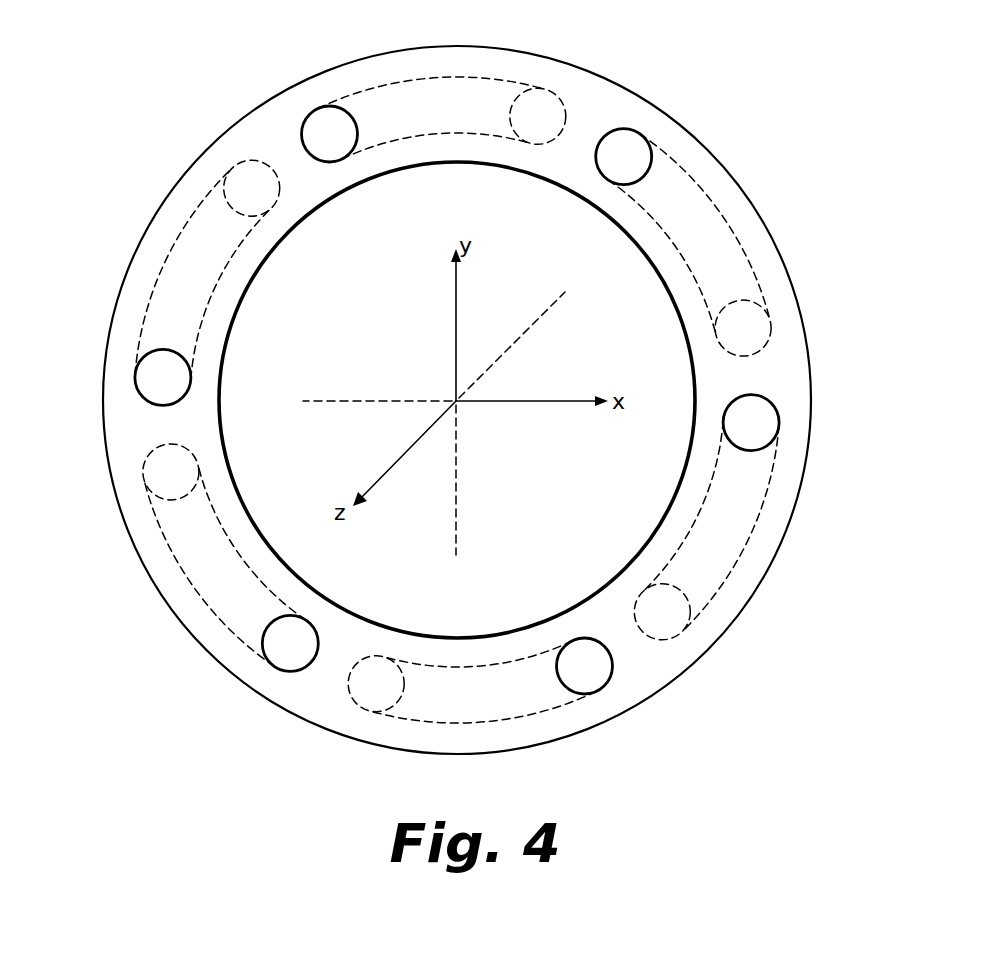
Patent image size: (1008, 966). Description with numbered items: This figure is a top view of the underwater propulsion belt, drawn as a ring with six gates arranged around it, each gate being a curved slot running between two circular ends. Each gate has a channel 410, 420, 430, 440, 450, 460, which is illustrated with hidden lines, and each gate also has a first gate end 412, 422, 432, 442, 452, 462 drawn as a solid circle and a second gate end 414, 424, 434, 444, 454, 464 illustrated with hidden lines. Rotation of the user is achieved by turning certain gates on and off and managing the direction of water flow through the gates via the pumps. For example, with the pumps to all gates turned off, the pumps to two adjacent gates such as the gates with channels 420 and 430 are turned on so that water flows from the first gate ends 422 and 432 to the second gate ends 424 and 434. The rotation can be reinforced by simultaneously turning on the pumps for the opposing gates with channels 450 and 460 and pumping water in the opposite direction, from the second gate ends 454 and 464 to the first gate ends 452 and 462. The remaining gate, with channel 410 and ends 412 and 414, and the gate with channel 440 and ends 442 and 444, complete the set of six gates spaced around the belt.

The channel 410 is at (438, 77).
The first gate end 412 is at (320, 117).
The second gate end 414 is at (550, 97).
The channel 420 is at (727, 228).
The first gate end 422 is at (636, 140).
The second gate end 424 is at (770, 330).
The channel 430 is at (735, 562).
The first gate end 432 is at (772, 427).
The second gate end 434 is at (680, 628).
The channel 440 is at (486, 728).
The first gate end 442 is at (598, 686).
The second gate end 444 is at (362, 703).
The channel 450 is at (200, 588).
The first gate end 452 is at (276, 662).
The second gate end 454 is at (140, 483).
The channel 460 is at (180, 252).
The first gate end 462 is at (183, 380).
The second gate end 464 is at (232, 173).